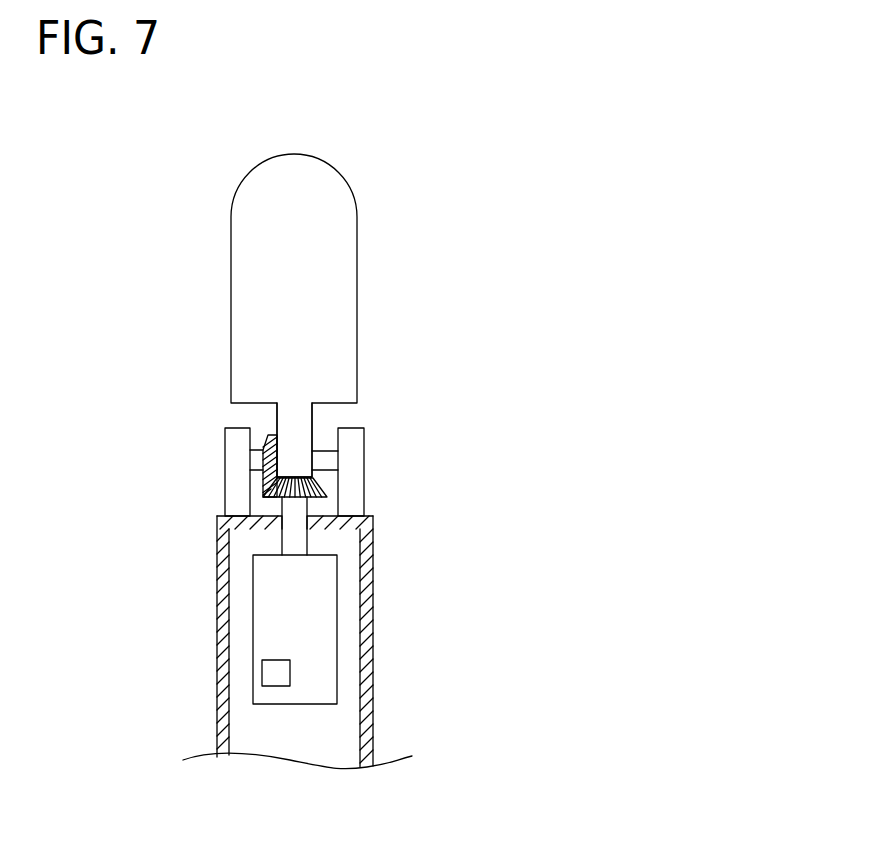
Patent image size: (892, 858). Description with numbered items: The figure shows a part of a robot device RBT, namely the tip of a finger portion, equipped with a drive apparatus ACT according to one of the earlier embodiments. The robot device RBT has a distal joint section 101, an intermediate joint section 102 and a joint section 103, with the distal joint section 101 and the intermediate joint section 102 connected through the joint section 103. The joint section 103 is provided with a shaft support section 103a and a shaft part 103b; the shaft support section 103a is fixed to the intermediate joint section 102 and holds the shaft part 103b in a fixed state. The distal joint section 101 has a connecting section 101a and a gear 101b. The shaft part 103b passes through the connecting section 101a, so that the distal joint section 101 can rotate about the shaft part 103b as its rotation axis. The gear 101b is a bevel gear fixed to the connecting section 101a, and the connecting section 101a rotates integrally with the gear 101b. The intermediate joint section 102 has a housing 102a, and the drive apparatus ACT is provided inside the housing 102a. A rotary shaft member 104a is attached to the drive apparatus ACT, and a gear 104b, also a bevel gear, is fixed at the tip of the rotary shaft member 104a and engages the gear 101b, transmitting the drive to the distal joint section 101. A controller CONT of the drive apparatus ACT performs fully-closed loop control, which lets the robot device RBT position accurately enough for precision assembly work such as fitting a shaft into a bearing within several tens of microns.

The robot device RBT is at (508, 157).
The distal joint section 101 is at (347, 270).
The connecting section 101a is at (290, 462).
The gear 101b is at (272, 437).
The intermediate joint section 102 is at (347, 642).
The housing 102a is at (373, 597).
The joint section 103 is at (374, 439).
The shaft support section 103a is at (353, 502).
The shaft part 103b is at (325, 455).
The rotary shaft member 104a is at (443, 608).
The gear 104b is at (320, 490).
The drive apparatus ACT is at (338, 668).
The controller CONT is at (286, 676).